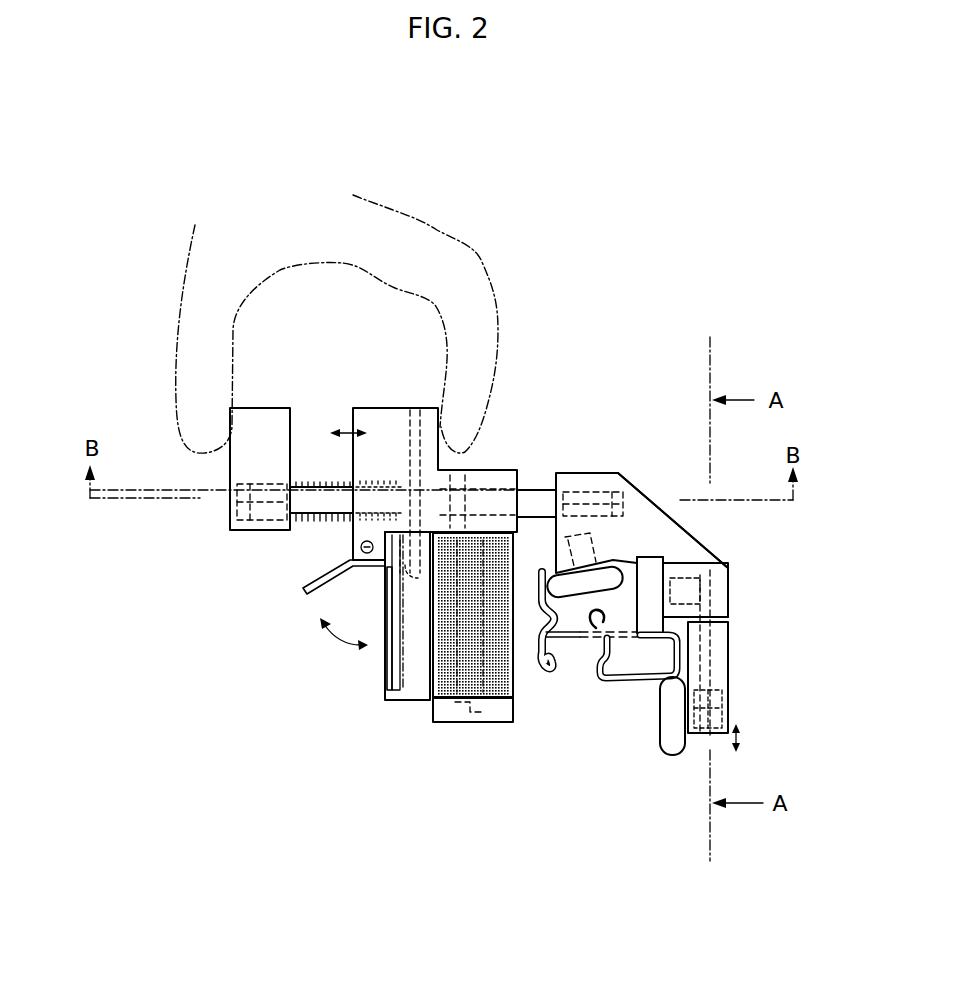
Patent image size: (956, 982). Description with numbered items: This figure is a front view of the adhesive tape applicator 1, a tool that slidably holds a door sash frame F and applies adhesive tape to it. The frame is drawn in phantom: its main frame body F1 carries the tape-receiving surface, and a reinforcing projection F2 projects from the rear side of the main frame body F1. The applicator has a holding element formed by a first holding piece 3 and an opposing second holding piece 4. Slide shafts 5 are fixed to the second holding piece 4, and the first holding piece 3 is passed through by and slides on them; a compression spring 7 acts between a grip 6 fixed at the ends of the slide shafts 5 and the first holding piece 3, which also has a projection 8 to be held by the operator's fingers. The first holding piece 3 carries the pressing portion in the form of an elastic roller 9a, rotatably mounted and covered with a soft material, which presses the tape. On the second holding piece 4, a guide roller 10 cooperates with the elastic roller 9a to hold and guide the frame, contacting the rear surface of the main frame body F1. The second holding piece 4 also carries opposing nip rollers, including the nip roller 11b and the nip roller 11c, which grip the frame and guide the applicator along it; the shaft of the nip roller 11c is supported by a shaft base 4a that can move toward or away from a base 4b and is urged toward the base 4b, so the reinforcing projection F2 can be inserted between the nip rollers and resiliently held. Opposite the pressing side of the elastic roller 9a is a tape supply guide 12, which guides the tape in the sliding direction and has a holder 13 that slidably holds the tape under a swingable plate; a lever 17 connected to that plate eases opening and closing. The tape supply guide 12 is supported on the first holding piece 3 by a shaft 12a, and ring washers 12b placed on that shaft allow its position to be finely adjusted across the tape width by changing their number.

The adhesive tape applicator 1 is at (115, 411).
The first holding piece 3 is at (360, 400).
The second holding piece 4 is at (628, 460).
The shaft base 4a is at (730, 644).
The base 4b is at (695, 542).
The slide shaft 5 is at (533, 498).
The grip 6 is at (240, 530).
The compression spring 7 is at (312, 520).
The projection 8 is at (440, 427).
The elastic roller 9a is at (513, 697).
The guide roller 10 is at (610, 565).
The nip roller 11b is at (666, 563).
The nip roller 11c is at (670, 756).
The tape supply guide 12 is at (413, 702).
The shaft 12a is at (410, 444).
The ring washer 12b is at (433, 530).
The holder 13 is at (370, 663).
The lever 17 is at (318, 585).
The door sash frame F is at (587, 656).
The main frame body F1 is at (553, 677).
The reinforcing projection F2 is at (633, 681).